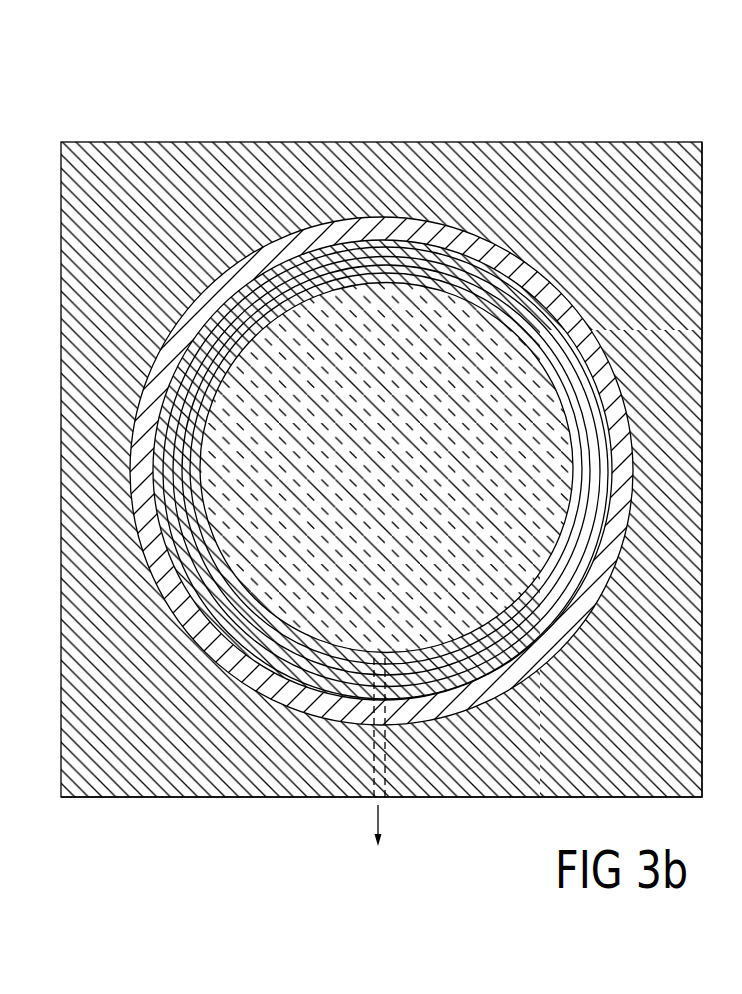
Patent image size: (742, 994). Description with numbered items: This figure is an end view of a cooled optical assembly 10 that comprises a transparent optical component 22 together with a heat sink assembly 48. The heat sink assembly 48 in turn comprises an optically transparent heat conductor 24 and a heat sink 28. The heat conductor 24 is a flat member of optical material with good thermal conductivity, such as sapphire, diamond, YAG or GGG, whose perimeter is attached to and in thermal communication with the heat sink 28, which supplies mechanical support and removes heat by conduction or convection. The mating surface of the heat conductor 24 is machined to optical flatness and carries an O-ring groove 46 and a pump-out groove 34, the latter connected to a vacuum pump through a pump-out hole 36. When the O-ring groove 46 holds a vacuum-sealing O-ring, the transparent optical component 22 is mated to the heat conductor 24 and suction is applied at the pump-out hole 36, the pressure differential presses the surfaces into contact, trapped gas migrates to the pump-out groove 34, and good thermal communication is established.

The cooled optical assembly 10 is at (186, 97).
The transparent optical component 22 is at (335, 242).
The optically transparent heat conductor 24 is at (403, 223).
The heat sink 28 is at (582, 797).
The pump-out groove 34 is at (378, 272).
The pump-out hole 36 is at (374, 765).
The O-ring groove 46 is at (450, 260).
The heat sink assembly 48 is at (124, 805).